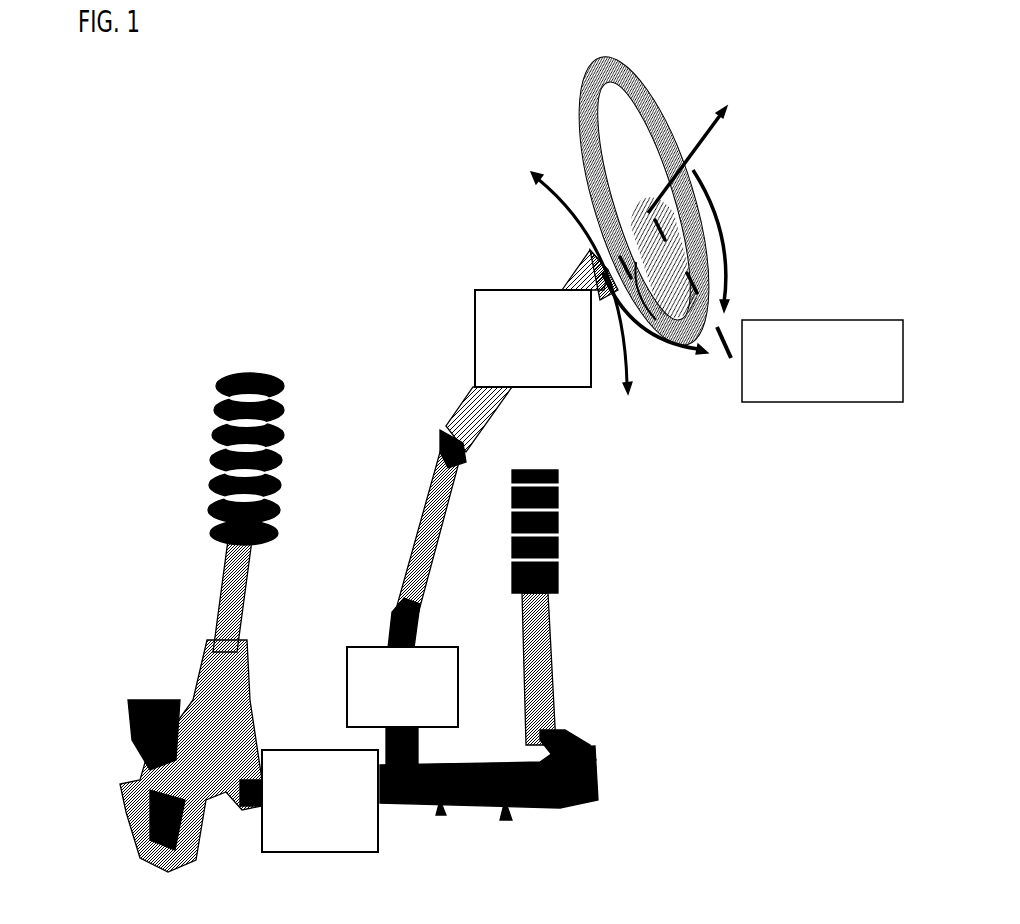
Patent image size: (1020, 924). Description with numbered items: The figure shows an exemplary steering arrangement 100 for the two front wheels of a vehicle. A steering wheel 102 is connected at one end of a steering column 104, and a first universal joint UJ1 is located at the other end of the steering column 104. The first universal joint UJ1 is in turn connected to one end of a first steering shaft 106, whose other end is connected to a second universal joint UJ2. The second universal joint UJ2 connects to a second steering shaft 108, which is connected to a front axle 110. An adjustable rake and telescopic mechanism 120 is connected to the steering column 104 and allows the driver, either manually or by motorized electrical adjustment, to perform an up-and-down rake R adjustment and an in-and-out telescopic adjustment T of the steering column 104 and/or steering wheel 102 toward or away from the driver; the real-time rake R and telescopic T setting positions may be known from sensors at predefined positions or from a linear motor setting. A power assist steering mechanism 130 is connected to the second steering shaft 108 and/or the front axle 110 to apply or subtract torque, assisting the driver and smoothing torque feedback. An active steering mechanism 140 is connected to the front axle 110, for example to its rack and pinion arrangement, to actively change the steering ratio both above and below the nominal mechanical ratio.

The steering arrangement 100 is at (338, 213).
The steering wheel 102 is at (592, 170).
The steering column 104 is at (569, 263).
The first steering shaft 106 is at (422, 537).
The second steering shaft 108 is at (413, 768).
The front axle 110 is at (488, 768).
The adjustable rake and telescopic mechanism 120 is at (474, 294).
The power assist steering (PAS) mechanism 130 is at (348, 670).
The active steering mechanism 140 is at (318, 750).
The first universal joint UJ1 is at (443, 440).
The second universal joint UJ2 is at (392, 624).
The telescopic adjustment T is at (710, 127).
The rake adjustment R is at (627, 378).